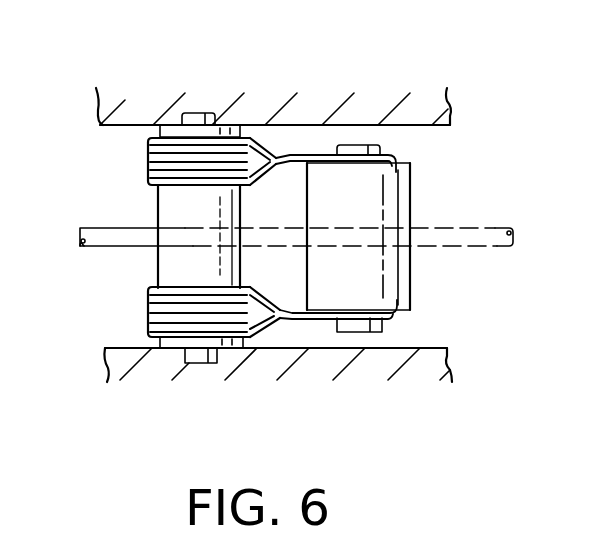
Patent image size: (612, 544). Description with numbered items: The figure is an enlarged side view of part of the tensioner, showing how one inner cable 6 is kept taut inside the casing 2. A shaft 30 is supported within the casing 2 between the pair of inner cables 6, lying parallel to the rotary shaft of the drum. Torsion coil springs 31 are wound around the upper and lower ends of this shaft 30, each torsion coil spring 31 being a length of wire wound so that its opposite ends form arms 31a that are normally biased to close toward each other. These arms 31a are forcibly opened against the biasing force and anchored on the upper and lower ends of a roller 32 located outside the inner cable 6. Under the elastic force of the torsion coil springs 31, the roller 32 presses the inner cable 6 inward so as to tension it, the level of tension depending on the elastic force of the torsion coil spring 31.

The casing 2 is at (423, 97).
The inner cable 6 is at (493, 228).
The shaft 30 is at (175, 257).
The torsion coil spring 31 is at (153, 168).
The arm 31a is at (298, 155).
The roller 32 is at (413, 190).